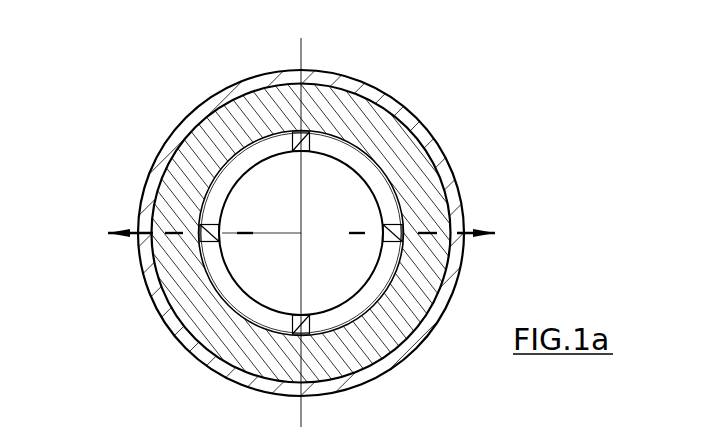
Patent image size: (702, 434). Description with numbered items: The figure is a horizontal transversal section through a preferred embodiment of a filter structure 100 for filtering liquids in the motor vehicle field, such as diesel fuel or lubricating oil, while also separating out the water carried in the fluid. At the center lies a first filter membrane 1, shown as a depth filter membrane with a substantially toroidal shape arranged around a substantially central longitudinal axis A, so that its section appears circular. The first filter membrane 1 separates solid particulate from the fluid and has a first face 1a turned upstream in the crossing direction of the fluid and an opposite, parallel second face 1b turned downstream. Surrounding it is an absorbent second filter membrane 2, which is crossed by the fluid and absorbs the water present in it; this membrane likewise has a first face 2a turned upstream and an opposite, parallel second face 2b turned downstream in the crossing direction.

The filter structure 100 is at (135, 147).
The first filter membrane 1 is at (427, 151).
The first face 1a is at (387, 193).
The second face 1b is at (381, 92).
The second filter membrane 2 is at (442, 295).
The first face 2a is at (433, 256).
The second face 2b is at (410, 352).
The longitudinal axis A is at (300, 233).